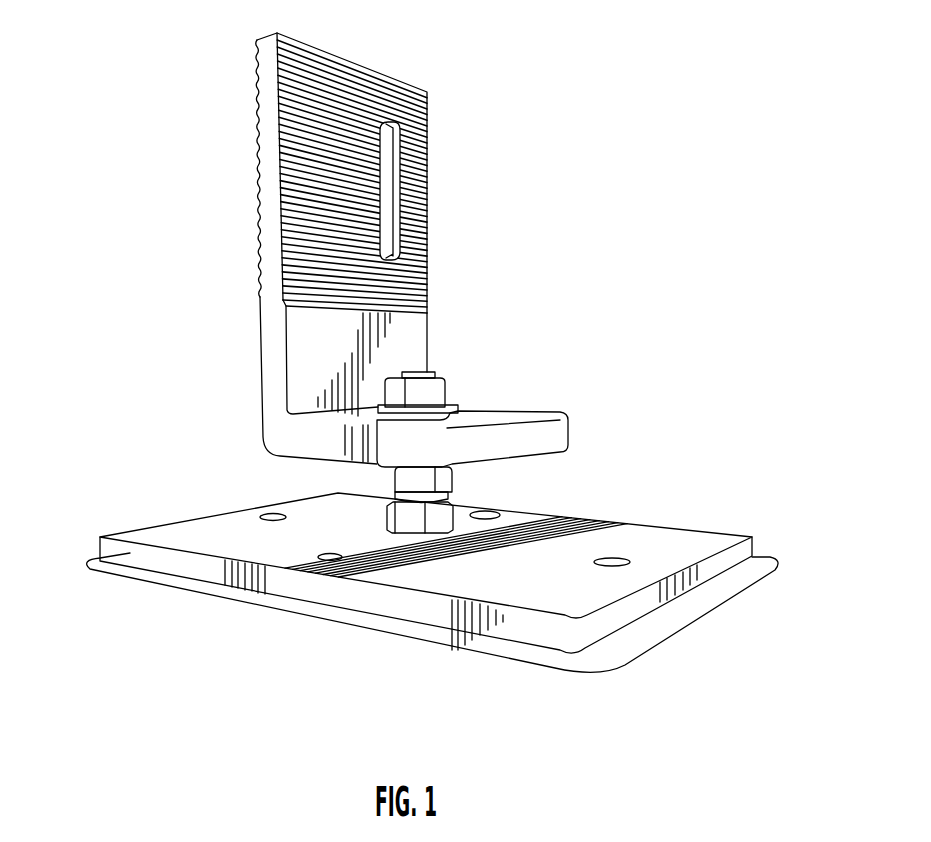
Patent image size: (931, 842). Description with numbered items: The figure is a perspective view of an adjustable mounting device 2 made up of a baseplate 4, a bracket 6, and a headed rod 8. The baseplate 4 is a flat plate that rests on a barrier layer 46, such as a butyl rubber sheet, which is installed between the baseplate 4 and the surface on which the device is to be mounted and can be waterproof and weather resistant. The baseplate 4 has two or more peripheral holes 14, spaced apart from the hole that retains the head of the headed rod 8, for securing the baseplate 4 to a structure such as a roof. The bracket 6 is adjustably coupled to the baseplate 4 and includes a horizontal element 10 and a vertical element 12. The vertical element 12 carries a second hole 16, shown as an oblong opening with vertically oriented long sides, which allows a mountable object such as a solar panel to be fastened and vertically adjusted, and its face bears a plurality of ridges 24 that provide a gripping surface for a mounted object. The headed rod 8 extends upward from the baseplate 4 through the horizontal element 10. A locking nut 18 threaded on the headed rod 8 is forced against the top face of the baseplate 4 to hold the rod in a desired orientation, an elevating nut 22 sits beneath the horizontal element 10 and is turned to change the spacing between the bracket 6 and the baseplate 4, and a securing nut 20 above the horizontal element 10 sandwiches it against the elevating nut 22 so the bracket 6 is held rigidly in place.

The adjustable mounting device 2 is at (162, 91).
The baseplate 4 is at (100, 556).
The bracket 6 is at (278, 378).
The headed rod 8 is at (410, 496).
The horizontal element 10 is at (535, 438).
The vertical element 12 is at (270, 246).
The peripheral holes 14 is at (612, 565).
The second hole 16 is at (388, 181).
The locking nut 18 is at (440, 518).
The securing nut 20 is at (417, 393).
The elevating nut 22 is at (420, 480).
The ridges 24 is at (342, 85).
The barrier layer 46 is at (655, 628).